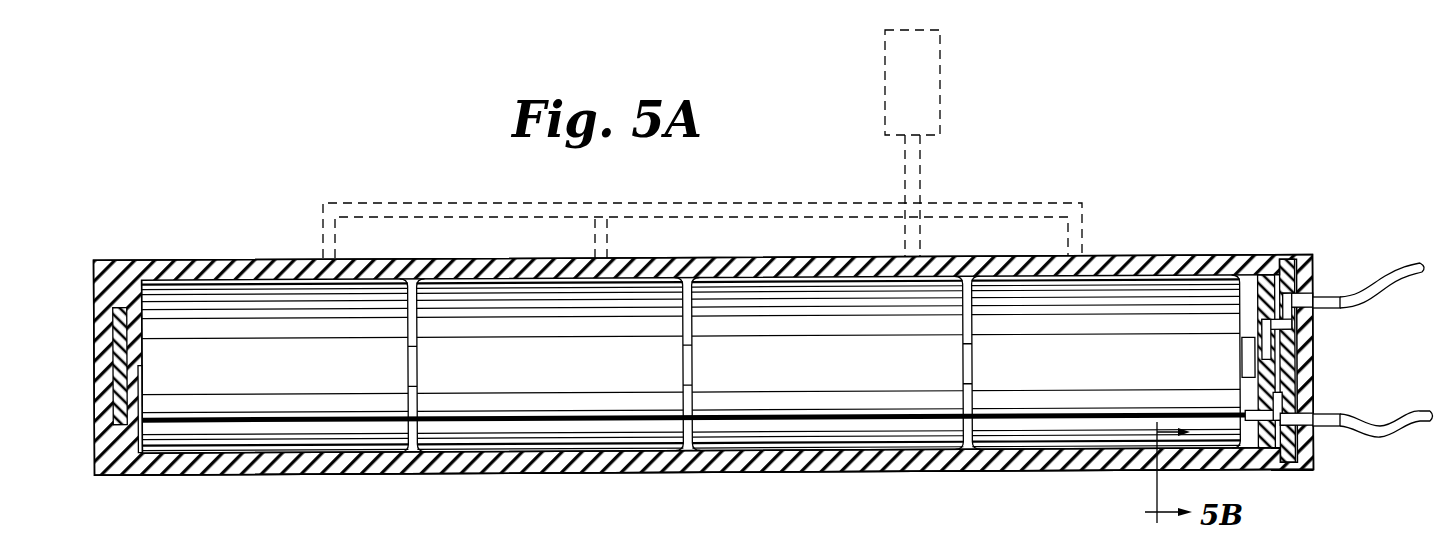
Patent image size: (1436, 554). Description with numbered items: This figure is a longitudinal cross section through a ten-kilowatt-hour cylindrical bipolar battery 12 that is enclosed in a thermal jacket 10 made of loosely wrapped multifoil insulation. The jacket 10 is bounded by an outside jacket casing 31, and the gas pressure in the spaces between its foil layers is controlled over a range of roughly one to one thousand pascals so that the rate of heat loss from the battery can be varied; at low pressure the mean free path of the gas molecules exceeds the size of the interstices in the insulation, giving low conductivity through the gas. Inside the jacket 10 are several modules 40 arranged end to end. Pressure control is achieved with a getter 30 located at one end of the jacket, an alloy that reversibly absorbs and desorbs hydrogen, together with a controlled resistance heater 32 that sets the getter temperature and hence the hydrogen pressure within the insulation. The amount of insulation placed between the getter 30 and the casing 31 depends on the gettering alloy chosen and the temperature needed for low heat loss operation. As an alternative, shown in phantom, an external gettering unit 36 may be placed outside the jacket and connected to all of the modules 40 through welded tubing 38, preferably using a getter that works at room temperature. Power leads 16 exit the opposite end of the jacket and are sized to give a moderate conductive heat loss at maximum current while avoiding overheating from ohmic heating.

The thermal jacket 10 is at (442, 463).
The bipolar battery 12 is at (1247, 211).
The power leads 16 is at (1385, 278).
The getter 30 is at (119, 318).
The outside jacket casing 31 is at (632, 468).
The controlled resistance heater 32 is at (147, 320).
The external gettering unit 36 is at (928, 83).
The welded tubing 38 is at (912, 160).
The modules 40 is at (262, 320).